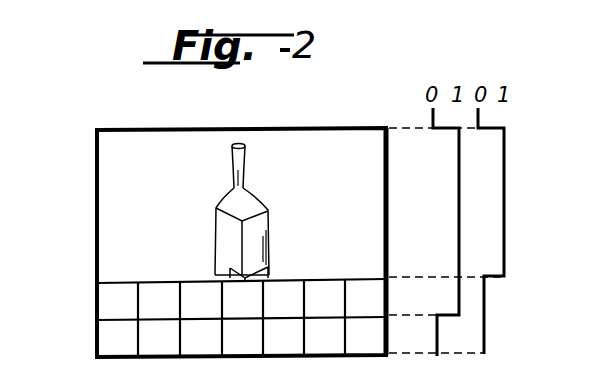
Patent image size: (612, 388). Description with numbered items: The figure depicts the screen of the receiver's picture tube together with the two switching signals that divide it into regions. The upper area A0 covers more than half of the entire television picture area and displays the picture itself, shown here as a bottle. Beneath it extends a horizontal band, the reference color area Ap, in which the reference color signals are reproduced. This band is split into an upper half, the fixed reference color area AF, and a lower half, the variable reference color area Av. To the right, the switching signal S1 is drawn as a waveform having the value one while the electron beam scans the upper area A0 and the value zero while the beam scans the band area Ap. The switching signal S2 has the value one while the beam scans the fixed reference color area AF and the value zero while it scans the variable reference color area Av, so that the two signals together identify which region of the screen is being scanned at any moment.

The area of the picture tube screen A0 is at (90, 132).
The reference color area Ap is at (48, 283).
The fixed reference color area AF is at (90, 283).
The variable reference color area Av is at (90, 320).
The switching signal S1 is at (504, 175).
The switching signal S2 is at (459, 204).